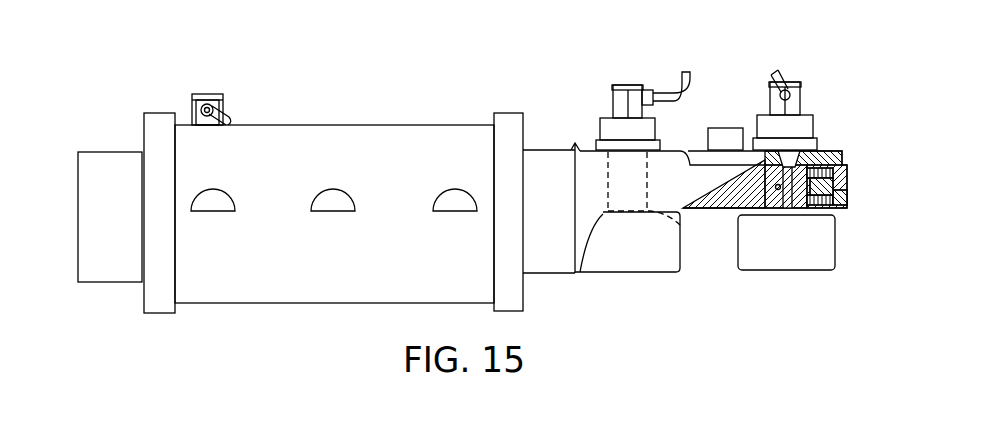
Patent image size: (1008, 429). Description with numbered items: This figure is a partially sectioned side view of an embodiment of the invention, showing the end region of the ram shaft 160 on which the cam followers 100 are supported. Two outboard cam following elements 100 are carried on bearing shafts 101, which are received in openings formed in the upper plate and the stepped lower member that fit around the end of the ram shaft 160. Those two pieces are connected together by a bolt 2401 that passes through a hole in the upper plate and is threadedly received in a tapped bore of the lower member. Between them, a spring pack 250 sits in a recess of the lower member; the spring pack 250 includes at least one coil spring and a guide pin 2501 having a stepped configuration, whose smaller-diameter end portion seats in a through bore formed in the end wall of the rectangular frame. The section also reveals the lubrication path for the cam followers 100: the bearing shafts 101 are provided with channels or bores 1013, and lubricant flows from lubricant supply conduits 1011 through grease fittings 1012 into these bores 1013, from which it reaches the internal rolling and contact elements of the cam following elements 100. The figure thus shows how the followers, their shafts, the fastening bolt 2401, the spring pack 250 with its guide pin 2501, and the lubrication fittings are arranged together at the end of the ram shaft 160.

The cam follower 100 is at (635, 258).
The bearing shaft 101 is at (684, 225).
The ram shaft 160 is at (548, 265).
The spring pack 250 is at (828, 210).
The guide pin 2501 is at (847, 183).
The lubricant supply conduit 1011 is at (683, 82).
The grease fitting 1012 is at (622, 101).
The channel/bore 1013 is at (787, 209).
The bolt 2401 is at (722, 130).